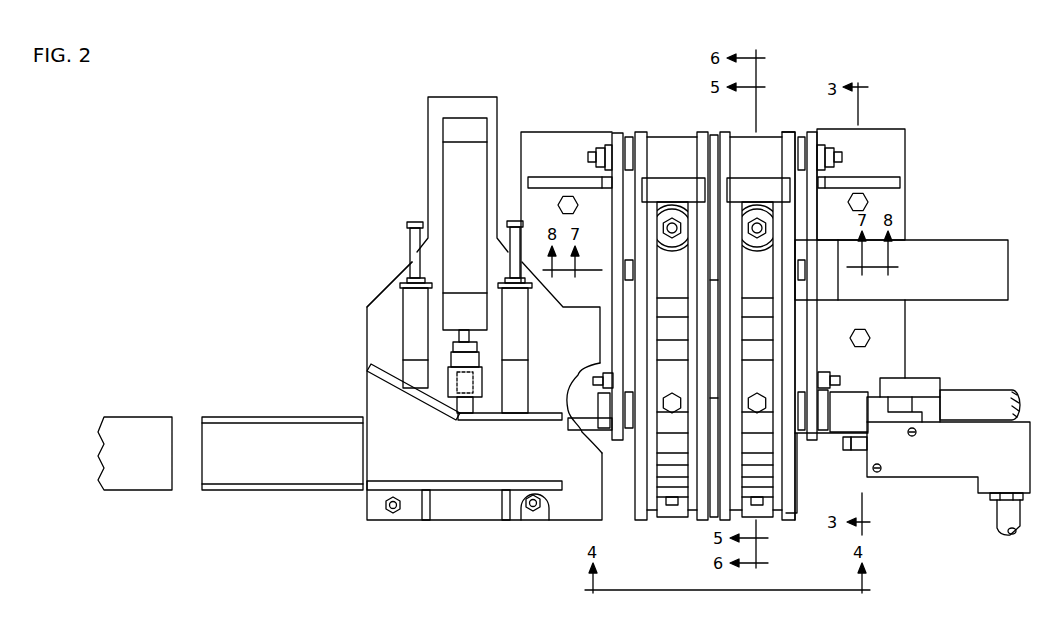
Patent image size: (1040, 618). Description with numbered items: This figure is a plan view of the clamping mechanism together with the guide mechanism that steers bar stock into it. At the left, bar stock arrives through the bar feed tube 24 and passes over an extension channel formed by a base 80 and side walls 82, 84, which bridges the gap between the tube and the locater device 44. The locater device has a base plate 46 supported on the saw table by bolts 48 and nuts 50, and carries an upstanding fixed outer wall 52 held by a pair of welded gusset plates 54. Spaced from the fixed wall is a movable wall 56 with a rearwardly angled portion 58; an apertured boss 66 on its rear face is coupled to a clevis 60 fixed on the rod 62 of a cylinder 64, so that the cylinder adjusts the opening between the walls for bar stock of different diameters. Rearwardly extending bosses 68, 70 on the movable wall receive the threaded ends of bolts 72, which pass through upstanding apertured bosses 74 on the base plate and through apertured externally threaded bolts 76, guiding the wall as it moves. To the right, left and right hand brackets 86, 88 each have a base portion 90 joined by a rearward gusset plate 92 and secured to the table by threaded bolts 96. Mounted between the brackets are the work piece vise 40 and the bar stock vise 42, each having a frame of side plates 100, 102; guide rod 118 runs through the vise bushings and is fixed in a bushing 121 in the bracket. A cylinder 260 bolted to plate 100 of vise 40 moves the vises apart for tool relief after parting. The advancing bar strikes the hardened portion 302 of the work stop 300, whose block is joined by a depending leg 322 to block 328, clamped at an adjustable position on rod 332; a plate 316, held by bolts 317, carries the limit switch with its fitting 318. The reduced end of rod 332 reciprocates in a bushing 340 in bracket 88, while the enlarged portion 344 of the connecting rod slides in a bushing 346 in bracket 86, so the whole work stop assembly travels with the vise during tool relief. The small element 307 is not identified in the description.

The bar feed tube 24 is at (118, 464).
The work piece vise 40 is at (773, 115).
The bar stock vise 42 is at (672, 132).
The locater device 44 is at (376, 241).
The base plate 46 is at (377, 326).
The bolts 48 is at (549, 515).
The nuts 50 is at (393, 513).
The fixed outer wall 52 is at (485, 483).
The gusset plates 54 is at (430, 507).
The movable wall 56 is at (490, 420).
The rearwardly angularly extending portion 58 is at (412, 393).
The clevis 60 is at (479, 375).
The rod 62 is at (467, 330).
The cylinder 64 is at (455, 227).
The apertured boss 66 is at (466, 406).
The rearwardly extending boss 68 is at (527, 391).
The rearwardly extending boss 70 is at (410, 371).
The bolts 72 is at (412, 246).
The upstanding apertured bosses 74 is at (523, 328).
The apertured externally threaded bolts 76 is at (392, 279).
The base 80 is at (262, 462).
The side wall 82 is at (258, 418).
The side wall 84 is at (272, 490).
The left hand bracket 86 is at (622, 133).
The right hand bracket 88 is at (809, 133).
The base portion 90 is at (538, 164).
The rearwardly located gusset plate 92 is at (575, 187).
The threaded bolts 96 is at (558, 205).
The side plate 100 is at (788, 132).
The side plate 102 is at (728, 133).
The guide rod 118 is at (715, 133).
The bushing 121 is at (597, 165).
The cylinder 260 is at (917, 276).
The work stop 300 is at (857, 450).
The hardened portion 302 is at (845, 450).
The tube 307 is at (1008, 532).
The plate 316 is at (948, 466).
The bolts 317 is at (882, 466).
The fitting 318 is at (989, 505).
The depending leg 322 is at (920, 431).
The block 328 is at (898, 396).
The rod 332 is at (835, 421).
The bushing 340 is at (820, 423).
The portion of increased diameter 344 is at (597, 398).
The bushing 346 is at (628, 430).